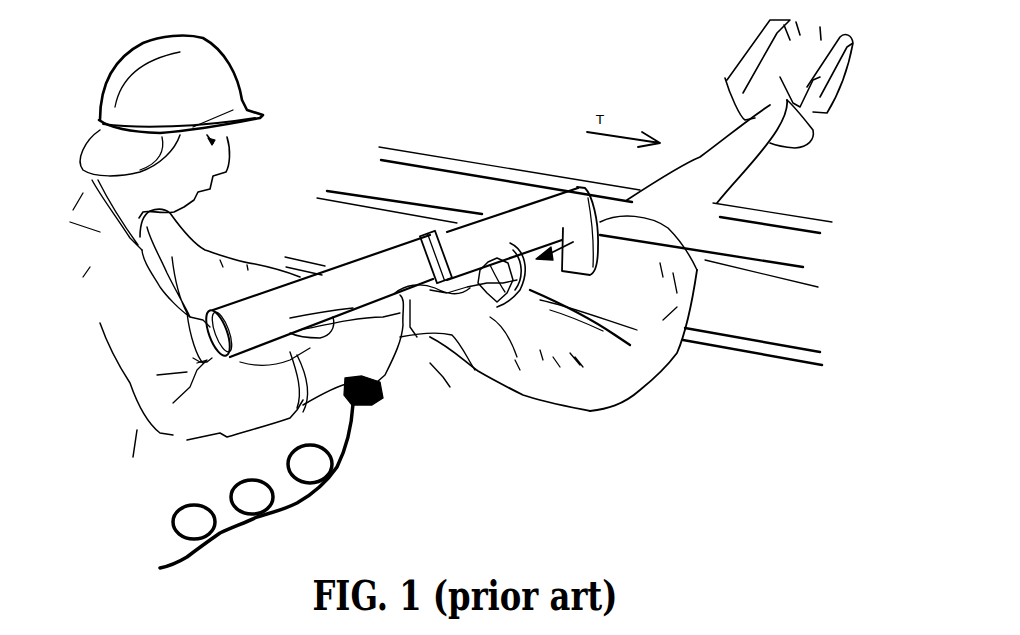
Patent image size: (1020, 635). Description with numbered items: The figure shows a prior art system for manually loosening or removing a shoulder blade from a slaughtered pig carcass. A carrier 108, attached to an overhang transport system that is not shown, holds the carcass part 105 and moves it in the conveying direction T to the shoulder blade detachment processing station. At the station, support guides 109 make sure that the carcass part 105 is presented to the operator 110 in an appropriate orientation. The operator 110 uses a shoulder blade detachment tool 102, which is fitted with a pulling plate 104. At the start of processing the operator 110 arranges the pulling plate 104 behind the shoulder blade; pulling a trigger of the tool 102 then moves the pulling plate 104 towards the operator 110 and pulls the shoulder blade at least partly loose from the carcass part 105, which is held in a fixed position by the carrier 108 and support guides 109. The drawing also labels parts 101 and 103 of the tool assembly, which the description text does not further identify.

The handle / control unit with power cord 101 is at (370, 403).
The shoulder blade detachment tool 102 is at (403, 265).
The strap / sling 103 is at (500, 297).
The pulling plate 104 is at (513, 290).
The carcass part 105 is at (630, 363).
The carrier 108 is at (763, 65).
The support guides 109 is at (426, 158).
The operator 110 is at (215, 78).